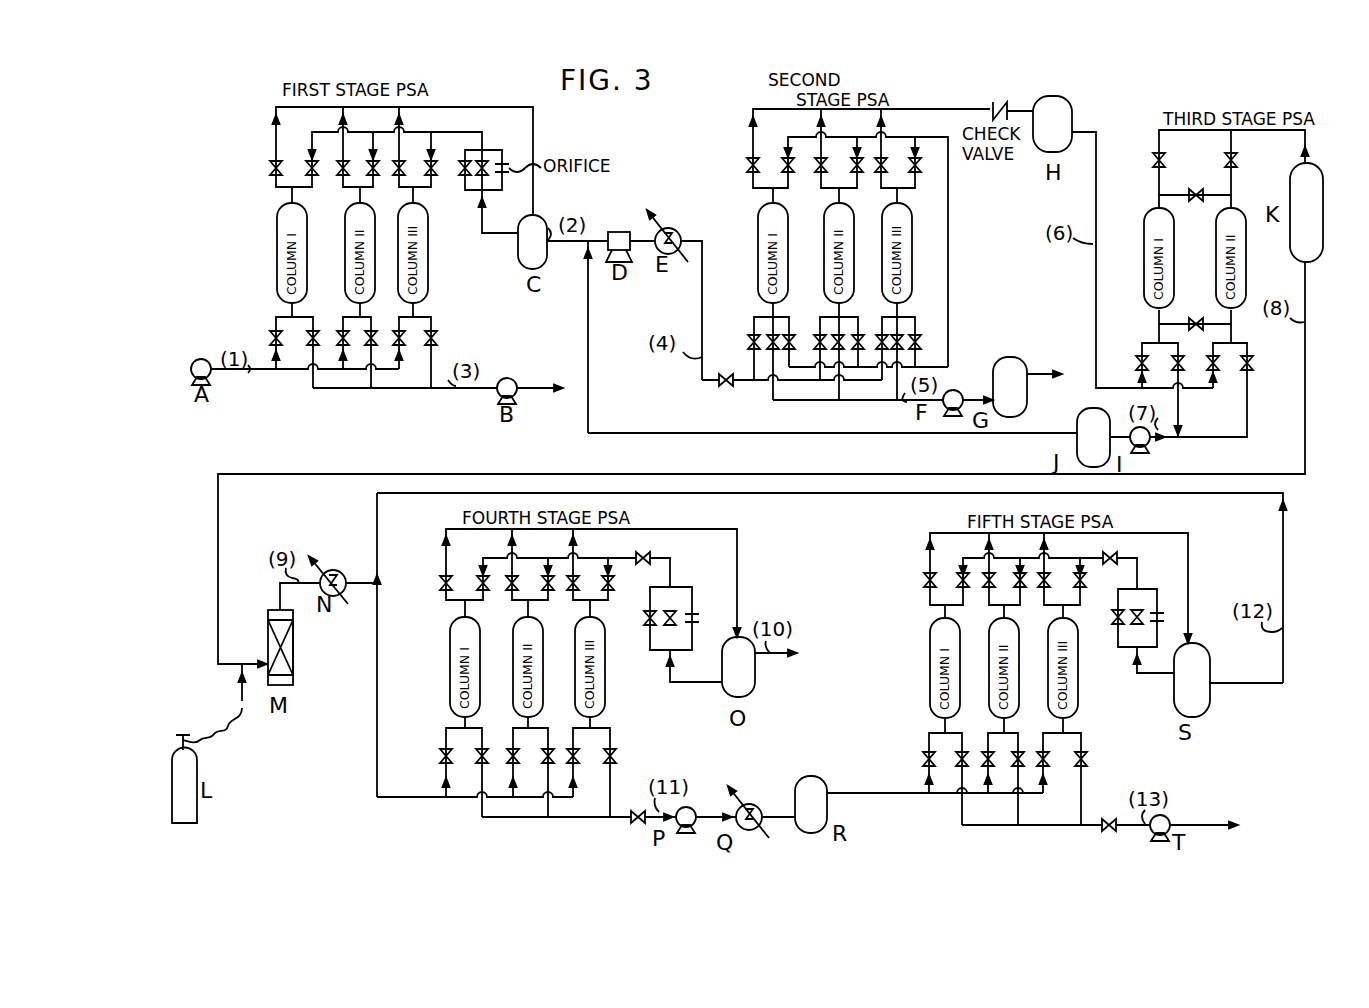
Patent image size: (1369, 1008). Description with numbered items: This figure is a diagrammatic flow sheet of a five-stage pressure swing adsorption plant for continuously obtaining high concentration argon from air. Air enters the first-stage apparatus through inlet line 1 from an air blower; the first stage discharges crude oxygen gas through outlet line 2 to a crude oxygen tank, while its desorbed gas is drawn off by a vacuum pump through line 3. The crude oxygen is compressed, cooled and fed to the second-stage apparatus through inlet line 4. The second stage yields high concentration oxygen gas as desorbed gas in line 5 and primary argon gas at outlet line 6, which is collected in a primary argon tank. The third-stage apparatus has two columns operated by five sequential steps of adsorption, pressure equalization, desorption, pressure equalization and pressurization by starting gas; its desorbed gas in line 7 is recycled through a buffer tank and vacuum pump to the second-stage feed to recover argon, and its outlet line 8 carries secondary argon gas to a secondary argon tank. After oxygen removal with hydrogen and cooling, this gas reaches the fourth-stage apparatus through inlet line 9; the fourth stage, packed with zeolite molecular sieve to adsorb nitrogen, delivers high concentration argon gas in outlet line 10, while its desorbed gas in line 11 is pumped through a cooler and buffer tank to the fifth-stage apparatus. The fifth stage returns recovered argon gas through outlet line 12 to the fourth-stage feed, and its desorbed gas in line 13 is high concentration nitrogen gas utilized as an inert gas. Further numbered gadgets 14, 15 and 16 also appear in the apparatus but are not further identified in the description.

The first-stage inlet line 1 is at (272, 342).
The first-stage outlet line 2 is at (338, 336).
The first-stage desorbed gas line 3 is at (404, 342).
The second-stage inlet line 4 is at (307, 342).
The second-stage desorbed gas line 5 is at (371, 341).
The second-stage outlet line 6 is at (434, 342).
The third-stage desorbed gas line 7 is at (271, 168).
The third-stage outlet line 8 is at (338, 178).
The fourth-stage inlet line 9 is at (397, 178).
The fourth-stage outlet line 10 is at (305, 164).
The fourth-stage desorbed gas line 11 is at (367, 164).
The fifth-stage outlet line 12 is at (424, 164).
The fifth-stage desorbed gas line 13 is at (460, 178).
The valve 14 is at (486, 160).
The valve 15 is at (854, 164).
The valve 16 is at (915, 172).